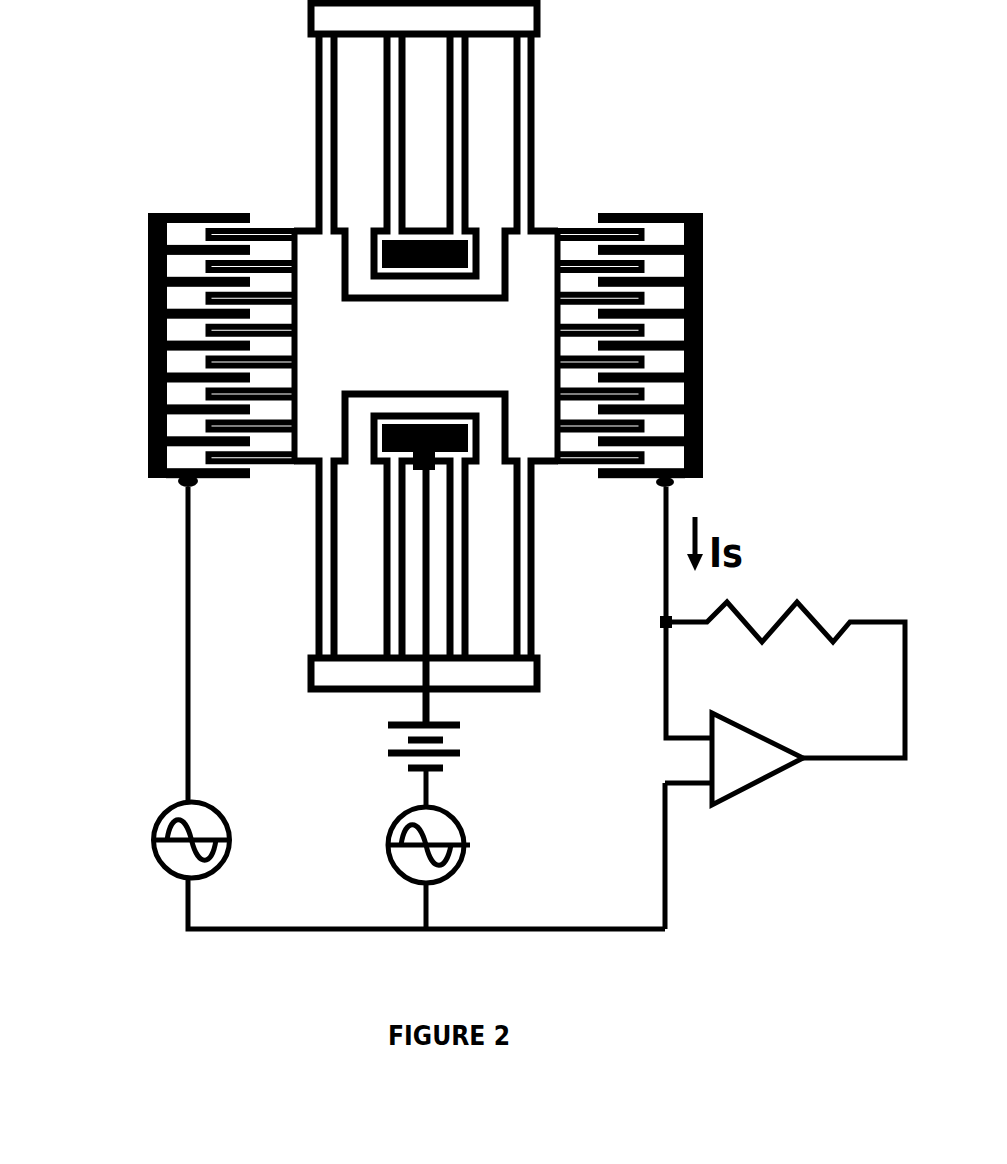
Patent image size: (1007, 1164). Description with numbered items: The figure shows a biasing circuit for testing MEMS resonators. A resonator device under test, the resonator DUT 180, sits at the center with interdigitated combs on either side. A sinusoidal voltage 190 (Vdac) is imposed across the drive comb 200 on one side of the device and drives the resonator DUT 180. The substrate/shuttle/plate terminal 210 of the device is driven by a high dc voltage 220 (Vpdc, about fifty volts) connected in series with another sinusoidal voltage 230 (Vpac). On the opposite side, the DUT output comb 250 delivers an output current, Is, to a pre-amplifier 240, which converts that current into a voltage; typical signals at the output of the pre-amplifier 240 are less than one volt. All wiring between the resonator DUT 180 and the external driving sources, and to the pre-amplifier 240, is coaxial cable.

The resonator DUT 180 is at (425, 346).
The sinusoidal voltage 190 is at (153, 840).
The drive comb 200 is at (148, 341).
The substrate/shuttle/plate terminal 210 is at (372, 462).
The high dc voltage 220 is at (388, 739).
The sinusoidal voltage 230 is at (388, 845).
The pre-amplifier 240 is at (755, 785).
The DUT output comb 250 is at (703, 345).